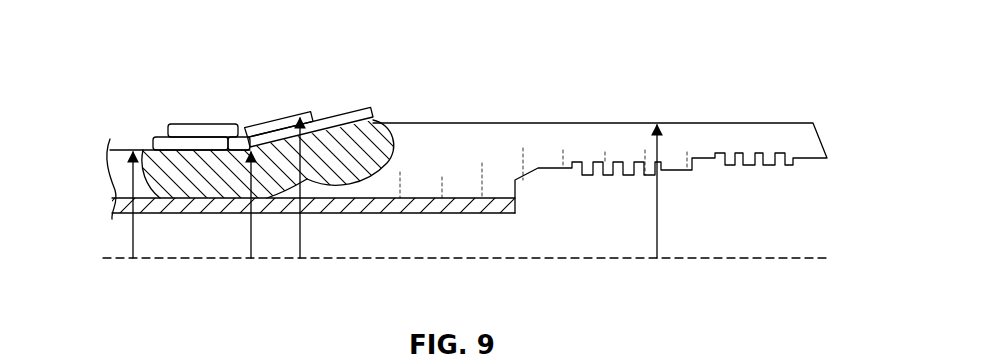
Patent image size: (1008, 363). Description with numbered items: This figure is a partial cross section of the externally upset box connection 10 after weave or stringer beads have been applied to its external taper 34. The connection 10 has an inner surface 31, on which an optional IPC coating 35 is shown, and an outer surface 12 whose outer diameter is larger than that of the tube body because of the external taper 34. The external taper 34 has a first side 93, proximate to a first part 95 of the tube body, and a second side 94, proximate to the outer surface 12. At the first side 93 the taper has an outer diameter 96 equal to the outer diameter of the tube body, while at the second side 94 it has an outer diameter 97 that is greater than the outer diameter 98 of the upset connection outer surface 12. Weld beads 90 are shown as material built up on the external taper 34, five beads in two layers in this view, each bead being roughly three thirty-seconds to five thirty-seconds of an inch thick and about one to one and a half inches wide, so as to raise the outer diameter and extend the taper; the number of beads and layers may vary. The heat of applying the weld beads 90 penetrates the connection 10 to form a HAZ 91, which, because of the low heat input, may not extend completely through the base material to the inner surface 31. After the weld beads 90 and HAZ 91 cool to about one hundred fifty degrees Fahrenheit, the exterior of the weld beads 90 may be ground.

The externally upset box connection 10 is at (176, 44).
The outer surface 12 is at (393, 128).
The inner surface 31 is at (460, 198).
The external taper 34 is at (307, 150).
The IPC coating 35 is at (355, 205).
The weld beads 90 is at (203, 122).
The HAZ 91 is at (393, 147).
The first side 93 is at (243, 128).
The second side 94 is at (372, 115).
The first part 95 is at (133, 232).
The outer diameter 96 is at (251, 232).
The outer diameter 97 is at (300, 232).
The outer diameter 98 is at (657, 232).